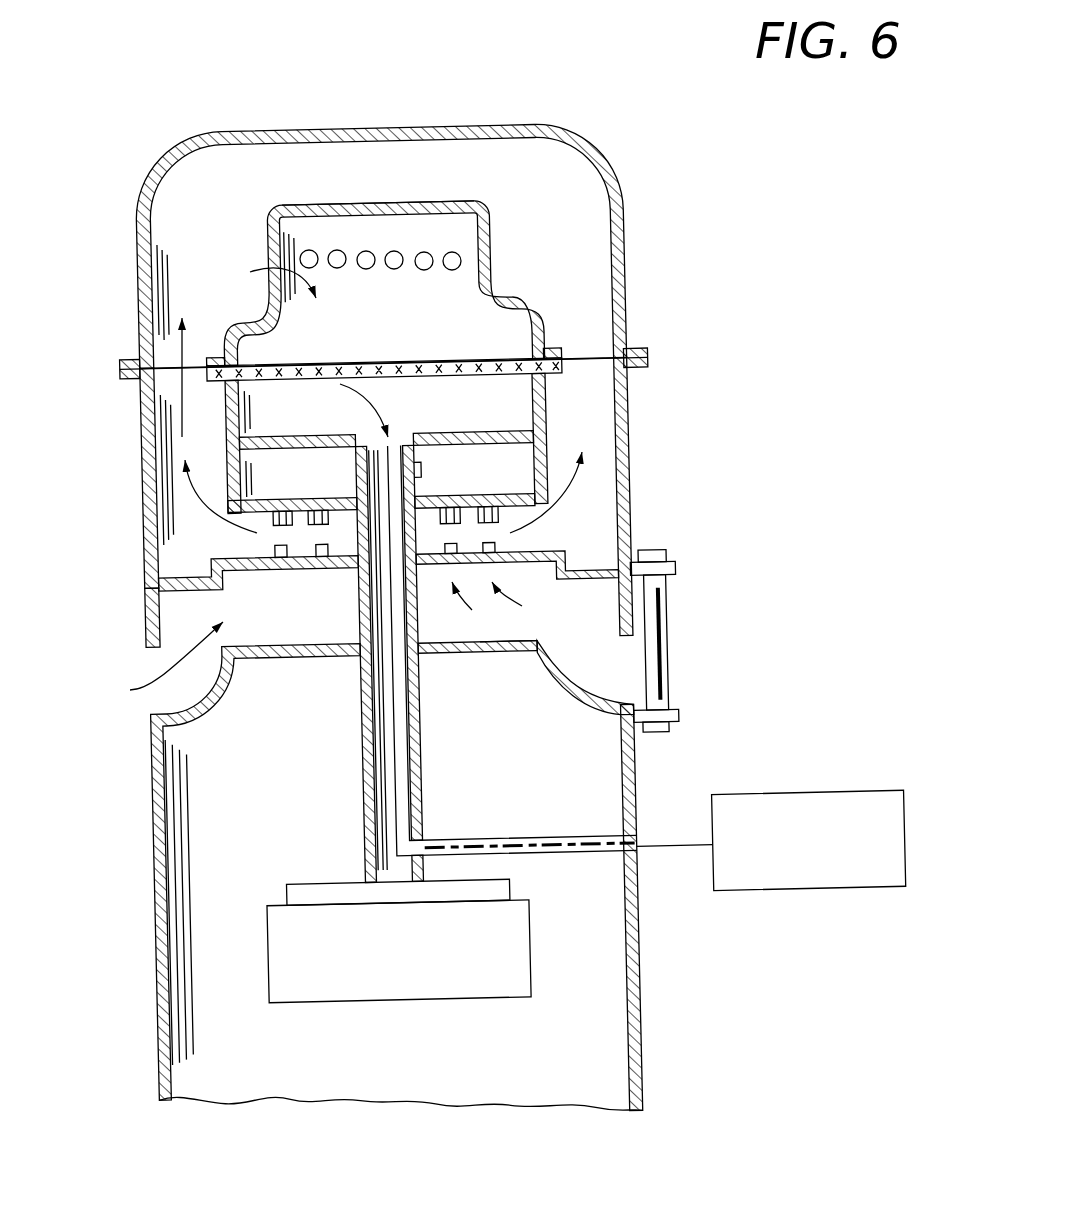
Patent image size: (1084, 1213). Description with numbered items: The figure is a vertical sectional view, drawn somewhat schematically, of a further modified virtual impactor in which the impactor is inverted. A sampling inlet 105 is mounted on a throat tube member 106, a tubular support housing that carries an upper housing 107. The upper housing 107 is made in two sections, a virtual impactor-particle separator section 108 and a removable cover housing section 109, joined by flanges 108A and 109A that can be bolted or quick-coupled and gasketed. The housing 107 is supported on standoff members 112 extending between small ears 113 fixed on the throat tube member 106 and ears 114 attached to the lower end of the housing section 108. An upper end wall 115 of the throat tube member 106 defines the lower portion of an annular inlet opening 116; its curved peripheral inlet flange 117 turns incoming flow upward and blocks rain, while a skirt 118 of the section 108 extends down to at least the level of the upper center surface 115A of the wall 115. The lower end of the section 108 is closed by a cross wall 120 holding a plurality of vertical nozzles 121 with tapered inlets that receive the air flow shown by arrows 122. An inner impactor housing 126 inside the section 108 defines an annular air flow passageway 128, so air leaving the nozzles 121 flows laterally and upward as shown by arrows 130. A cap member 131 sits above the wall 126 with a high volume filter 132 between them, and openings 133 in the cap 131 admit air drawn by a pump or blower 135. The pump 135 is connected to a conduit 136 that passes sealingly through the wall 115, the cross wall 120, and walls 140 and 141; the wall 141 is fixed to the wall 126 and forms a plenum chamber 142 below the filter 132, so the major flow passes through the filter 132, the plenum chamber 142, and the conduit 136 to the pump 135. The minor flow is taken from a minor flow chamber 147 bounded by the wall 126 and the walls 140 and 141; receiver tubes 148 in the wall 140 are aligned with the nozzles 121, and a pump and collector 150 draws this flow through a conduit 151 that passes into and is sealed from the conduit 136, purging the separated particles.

The sampling inlet 105 is at (628, 230).
The throat tube member 106 is at (642, 1001).
The upper housing 107 is at (700, 80).
The virtual impactor-particle separator section 108 is at (632, 497).
The flange 108A is at (641, 368).
The removable cover housing section 109 is at (480, 80).
The flange 109A is at (646, 350).
The standoff members 112 is at (668, 626).
The ears 113 is at (677, 714).
The ears 114 is at (665, 566).
The upper end wall 115 is at (468, 653).
The upper center surface 115A is at (490, 642).
The inlet opening 116 is at (612, 658).
The curved peripheral inlet flange 117 is at (560, 672).
The skirt 118 is at (148, 628).
The cross wall 120 is at (195, 580).
The nozzles 121 is at (510, 533).
The arrows 122 is at (490, 612).
The inner impactor housing 126 is at (546, 405).
The annular air flow passageway 128 is at (585, 382).
The arrows 130 is at (640, 470).
The cap member 131 is at (305, 203).
The high volume filter 132 is at (376, 364).
The openings 133 is at (292, 255).
The pump or blower 135 is at (432, 1000).
The conduit 136 is at (364, 785).
The wall 140 is at (340, 467).
The wall 141 is at (265, 436).
The plenum chamber 142 is at (500, 385).
The minor flow chamber 147 is at (462, 455).
The receiver tubes 148 is at (262, 520).
The pump and collector 150 is at (800, 792).
The conduit 151 is at (492, 838).